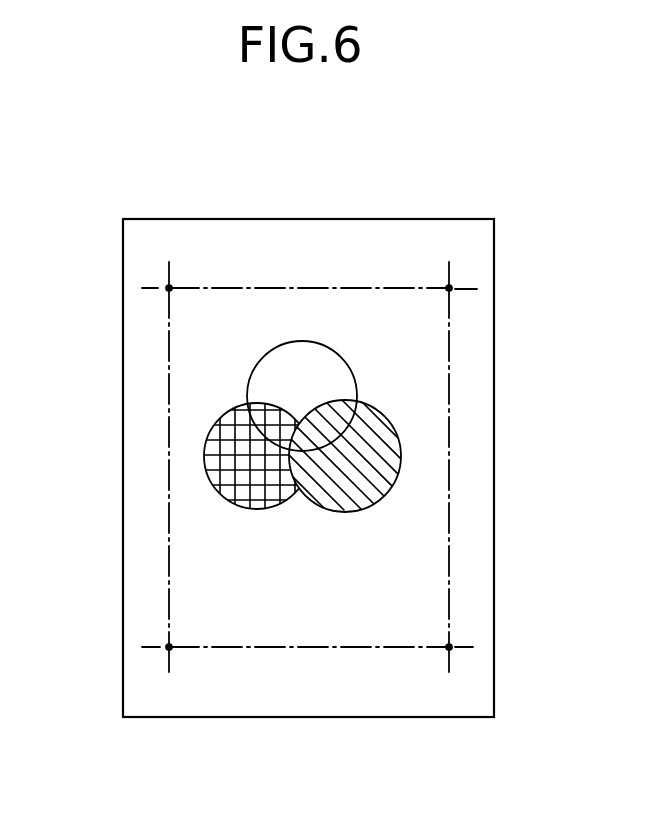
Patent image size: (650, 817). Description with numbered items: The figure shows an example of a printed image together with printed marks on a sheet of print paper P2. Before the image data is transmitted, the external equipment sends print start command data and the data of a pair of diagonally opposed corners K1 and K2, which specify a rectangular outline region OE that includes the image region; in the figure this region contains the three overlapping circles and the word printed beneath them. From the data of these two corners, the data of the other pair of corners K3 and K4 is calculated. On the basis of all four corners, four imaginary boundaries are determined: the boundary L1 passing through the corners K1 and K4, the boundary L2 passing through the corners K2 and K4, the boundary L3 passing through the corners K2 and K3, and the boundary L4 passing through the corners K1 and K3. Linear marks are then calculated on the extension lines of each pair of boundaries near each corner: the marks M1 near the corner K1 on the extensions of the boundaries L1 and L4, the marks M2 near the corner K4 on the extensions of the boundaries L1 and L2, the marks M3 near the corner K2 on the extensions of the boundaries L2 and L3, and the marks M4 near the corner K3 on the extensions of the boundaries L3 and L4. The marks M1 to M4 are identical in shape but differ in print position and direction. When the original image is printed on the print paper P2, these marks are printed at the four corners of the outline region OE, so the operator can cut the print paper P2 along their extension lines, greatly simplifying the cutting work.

The print paper P2 is at (495, 253).
The outline region OE is at (433, 397).
The imaginary boundary L1 is at (168, 413).
The imaginary boundary L2 is at (255, 648).
The imaginary boundary L3 is at (449, 516).
The imaginary boundary L4 is at (265, 288).
The corner K1 is at (171, 287).
The corner K2 is at (447, 648).
The corner K3 is at (448, 288).
The corner K4 is at (170, 649).
The linear marks M1 is at (170, 264).
The linear marks M2 is at (169, 660).
The linear marks M3 is at (449, 662).
The linear marks M4 is at (450, 277).